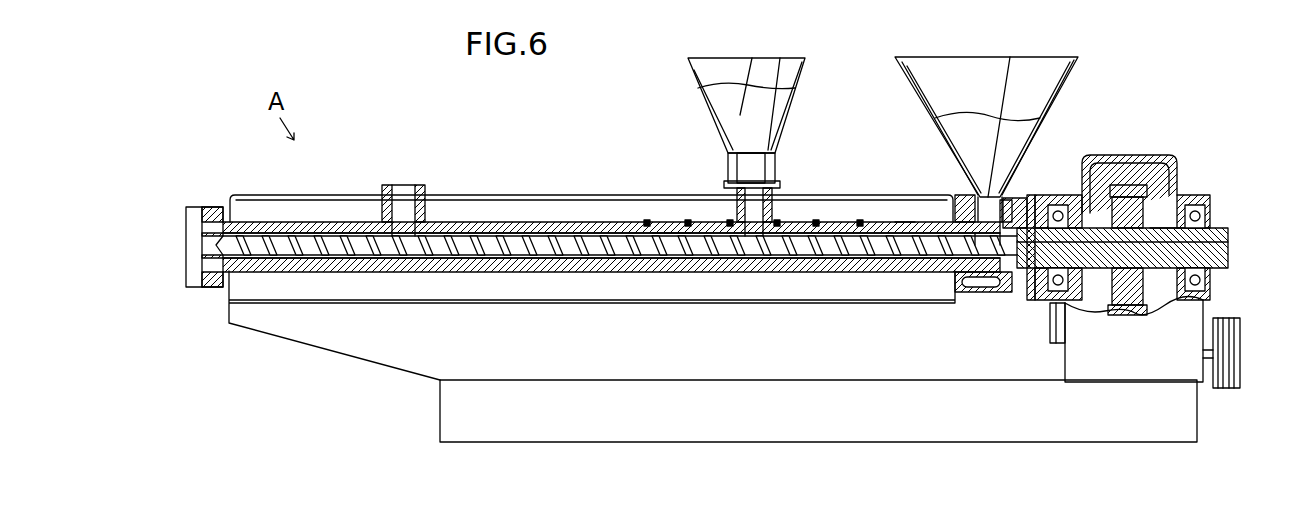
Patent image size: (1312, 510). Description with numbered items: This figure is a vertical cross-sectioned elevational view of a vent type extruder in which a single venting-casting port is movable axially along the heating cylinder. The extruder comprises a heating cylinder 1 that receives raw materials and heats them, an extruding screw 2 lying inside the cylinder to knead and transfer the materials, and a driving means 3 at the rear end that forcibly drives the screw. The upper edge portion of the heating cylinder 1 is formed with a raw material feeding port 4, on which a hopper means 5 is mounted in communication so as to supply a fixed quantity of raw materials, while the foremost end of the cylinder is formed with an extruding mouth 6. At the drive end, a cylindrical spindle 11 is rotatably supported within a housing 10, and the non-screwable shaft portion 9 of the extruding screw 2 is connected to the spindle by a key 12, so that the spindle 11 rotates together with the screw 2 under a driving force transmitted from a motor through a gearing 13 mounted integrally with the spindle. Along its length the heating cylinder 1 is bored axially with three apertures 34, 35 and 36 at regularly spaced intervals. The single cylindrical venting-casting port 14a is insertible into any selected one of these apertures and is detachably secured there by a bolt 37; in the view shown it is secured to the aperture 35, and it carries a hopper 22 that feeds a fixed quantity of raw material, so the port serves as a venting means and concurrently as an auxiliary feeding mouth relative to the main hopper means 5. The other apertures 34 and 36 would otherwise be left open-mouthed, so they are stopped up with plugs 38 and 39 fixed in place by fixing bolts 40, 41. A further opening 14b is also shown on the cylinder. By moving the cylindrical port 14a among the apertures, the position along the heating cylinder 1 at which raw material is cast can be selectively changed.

The heating cylinder 1 is at (546, 280).
The extruding screw 2 is at (548, 230).
The driving means 3 is at (1143, 371).
The raw material feeding port 4 is at (1005, 198).
The hopper means 5 is at (1055, 78).
The extruding mouth 6 is at (205, 290).
The non-screwable shaft portion 9 is at (1228, 240).
The housing 10 is at (1148, 156).
The cylindrical spindle 11 is at (1165, 222).
The key 12 is at (1112, 302).
The gearing 13 is at (1128, 186).
The venting-casting port 14a is at (757, 205).
The vent port 14b is at (406, 185).
The hopper 22 is at (792, 78).
The aperture 34 is at (902, 220).
The aperture 35 is at (729, 222).
The aperture 36 is at (646, 222).
The bolt 37 is at (779, 220).
The plug 38 is at (818, 220).
The plug 39 is at (662, 232).
The fixing bolt 40 is at (862, 220).
The fixing bolt 41 is at (687, 222).